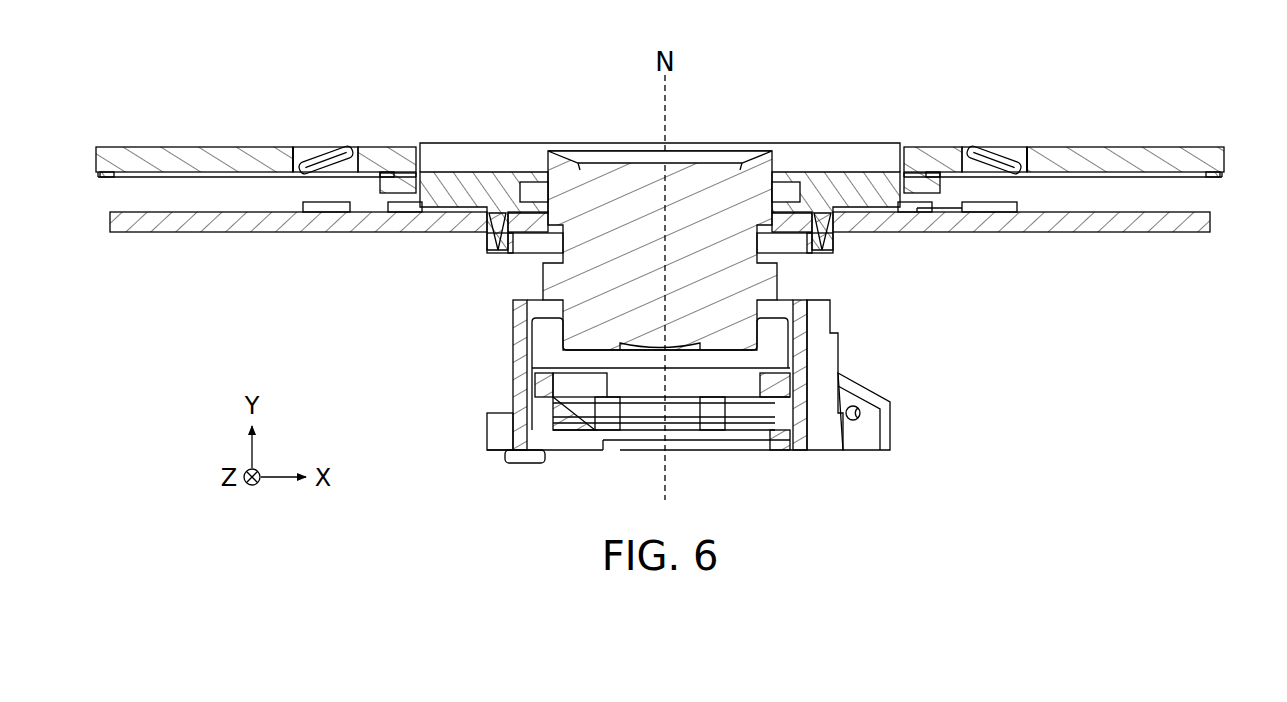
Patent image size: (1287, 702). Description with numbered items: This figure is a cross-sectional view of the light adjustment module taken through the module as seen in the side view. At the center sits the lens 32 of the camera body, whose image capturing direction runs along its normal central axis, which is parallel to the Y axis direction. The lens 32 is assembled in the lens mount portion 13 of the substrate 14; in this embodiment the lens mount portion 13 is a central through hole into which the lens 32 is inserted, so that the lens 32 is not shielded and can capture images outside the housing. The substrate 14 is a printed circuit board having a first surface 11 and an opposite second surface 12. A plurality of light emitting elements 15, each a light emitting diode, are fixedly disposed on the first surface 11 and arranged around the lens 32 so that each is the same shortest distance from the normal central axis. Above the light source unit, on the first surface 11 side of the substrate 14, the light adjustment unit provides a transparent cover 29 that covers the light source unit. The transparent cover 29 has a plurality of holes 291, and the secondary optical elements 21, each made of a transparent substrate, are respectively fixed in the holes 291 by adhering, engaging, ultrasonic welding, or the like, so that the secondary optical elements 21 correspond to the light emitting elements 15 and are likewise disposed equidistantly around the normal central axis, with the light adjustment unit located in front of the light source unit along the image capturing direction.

The first surface 11 is at (1160, 206).
The second surface 12 is at (1152, 233).
The lens mount portion 13 is at (516, 195).
The substrate 14 is at (110, 217).
The light emitting element 15 is at (324, 212).
The secondary optical element 21 is at (329, 150).
The transparent cover 29 is at (1140, 147).
The hole 291 is at (297, 147).
The lens 32 is at (626, 160).